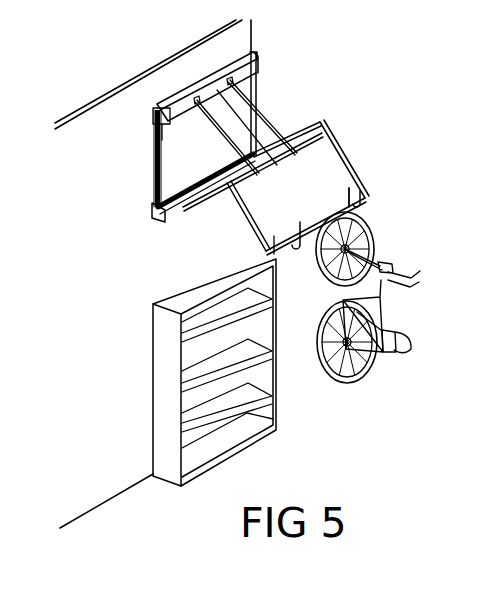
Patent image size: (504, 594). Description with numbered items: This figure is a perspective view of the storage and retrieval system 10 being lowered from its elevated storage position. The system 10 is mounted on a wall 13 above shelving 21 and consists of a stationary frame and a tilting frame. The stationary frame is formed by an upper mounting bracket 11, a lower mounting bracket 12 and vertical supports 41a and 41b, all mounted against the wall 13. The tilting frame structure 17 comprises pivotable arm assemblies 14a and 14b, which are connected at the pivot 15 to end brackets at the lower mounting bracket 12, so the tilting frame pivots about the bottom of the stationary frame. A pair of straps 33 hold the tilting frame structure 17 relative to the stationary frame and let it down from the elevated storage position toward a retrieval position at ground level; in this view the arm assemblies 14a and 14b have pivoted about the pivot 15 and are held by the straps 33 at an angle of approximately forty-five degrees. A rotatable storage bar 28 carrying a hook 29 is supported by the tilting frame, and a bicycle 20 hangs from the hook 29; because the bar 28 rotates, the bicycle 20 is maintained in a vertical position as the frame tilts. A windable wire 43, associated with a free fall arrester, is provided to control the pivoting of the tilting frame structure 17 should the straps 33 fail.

The storage and retrieval system 10 is at (284, 61).
The upper mounting bracket 11 is at (155, 113).
The lower mounting bracket 12 is at (154, 216).
The wall 13 is at (107, 285).
The pivotable arm assembly 14a is at (242, 221).
The pivotable arm assembly 14b is at (363, 159).
The pivot 15 is at (154, 205).
The tilting frame structure 17 is at (337, 128).
The bicycle 20 is at (388, 309).
The shelving 21 is at (167, 345).
The rotatable storage bar 28 is at (363, 198).
The hook 29 is at (300, 250).
The straps 33 is at (262, 118).
The vertical support 41a is at (154, 147).
The vertical support 41b is at (256, 90).
The windable wire 43 is at (258, 146).